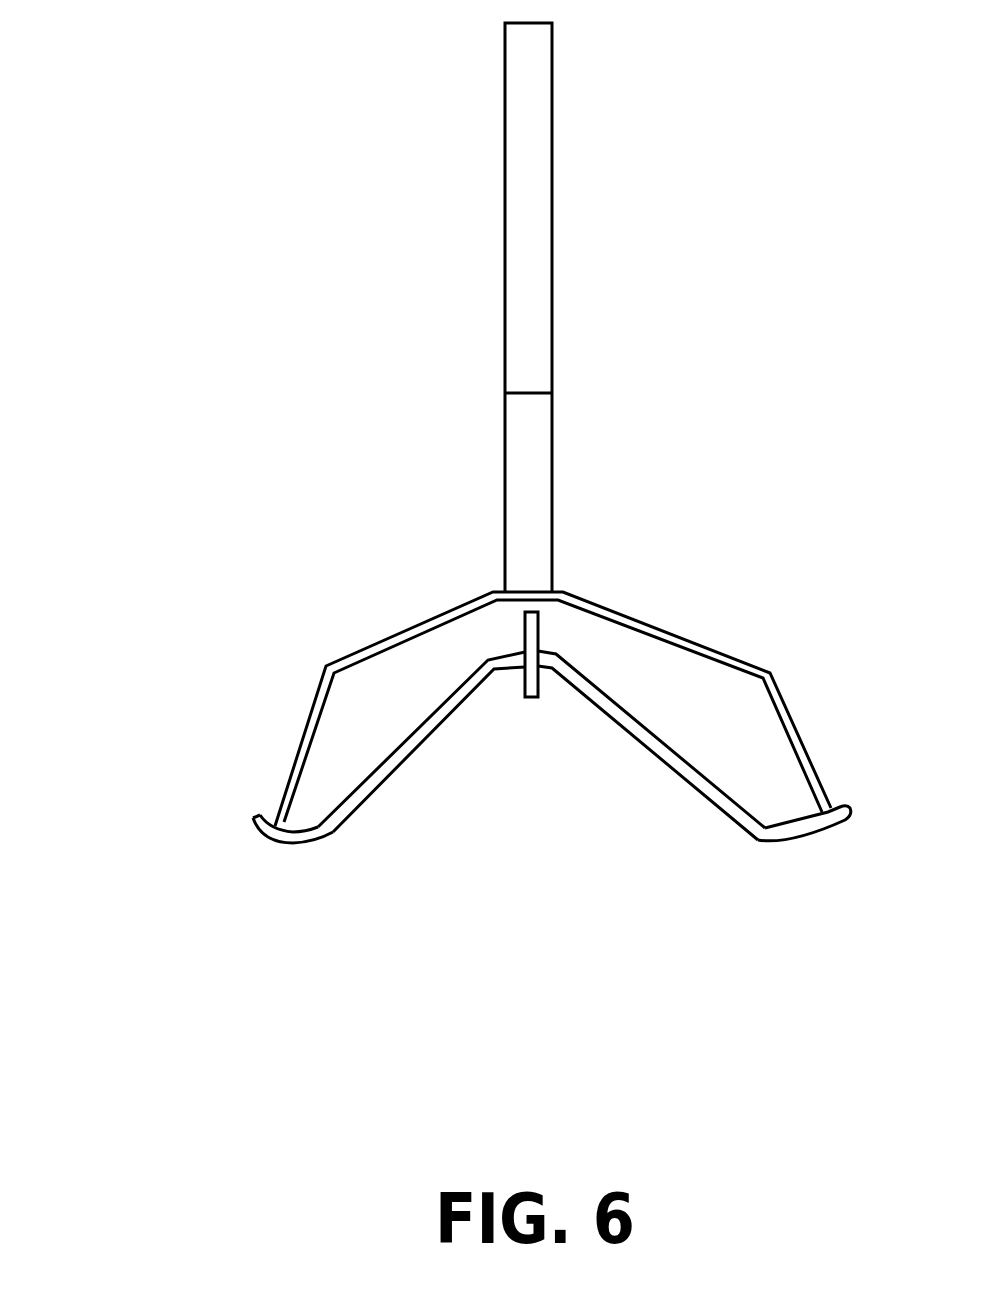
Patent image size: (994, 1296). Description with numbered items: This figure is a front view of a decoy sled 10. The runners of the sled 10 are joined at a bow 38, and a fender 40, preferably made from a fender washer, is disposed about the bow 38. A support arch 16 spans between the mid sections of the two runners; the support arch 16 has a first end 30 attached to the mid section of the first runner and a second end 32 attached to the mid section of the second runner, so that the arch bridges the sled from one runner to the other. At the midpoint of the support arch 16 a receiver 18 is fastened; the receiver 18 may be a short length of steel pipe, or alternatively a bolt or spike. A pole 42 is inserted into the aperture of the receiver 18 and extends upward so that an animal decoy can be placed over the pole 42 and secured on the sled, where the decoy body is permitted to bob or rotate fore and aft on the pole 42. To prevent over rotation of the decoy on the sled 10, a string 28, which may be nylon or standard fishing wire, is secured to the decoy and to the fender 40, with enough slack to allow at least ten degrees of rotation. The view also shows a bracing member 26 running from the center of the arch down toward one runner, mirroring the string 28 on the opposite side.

The decoy sled 10 is at (153, 389).
The support arch 16 is at (325, 666).
The receiver 18 is at (552, 477).
The right brace strut 26 is at (558, 655).
The string 28 is at (497, 658).
The first end 30 is at (827, 796).
The second end 32 is at (275, 822).
The bow 38 is at (543, 706).
The fender 40 is at (538, 626).
The pole 42 is at (552, 282).